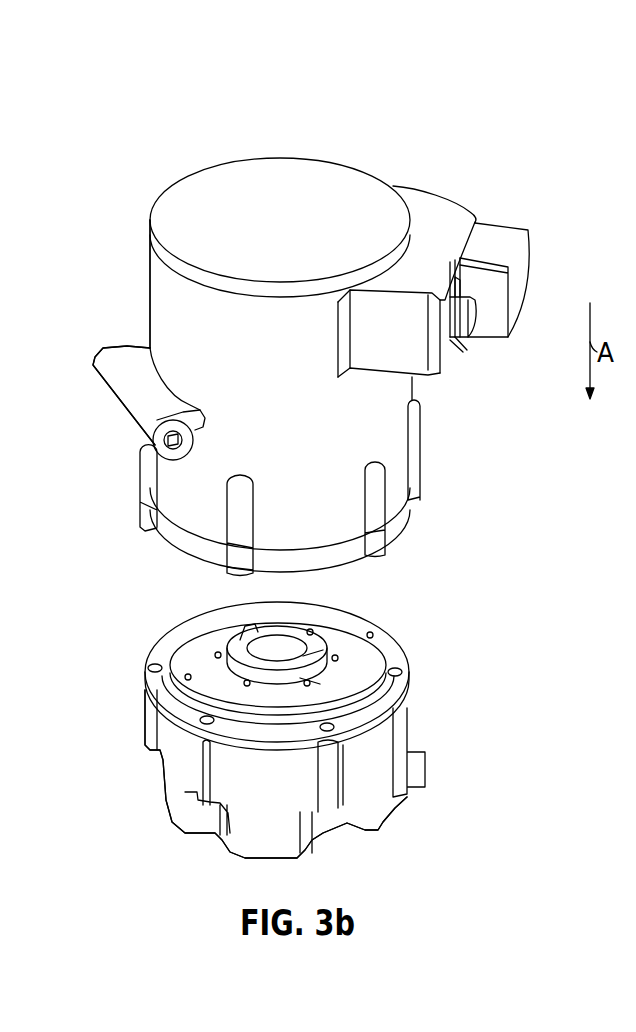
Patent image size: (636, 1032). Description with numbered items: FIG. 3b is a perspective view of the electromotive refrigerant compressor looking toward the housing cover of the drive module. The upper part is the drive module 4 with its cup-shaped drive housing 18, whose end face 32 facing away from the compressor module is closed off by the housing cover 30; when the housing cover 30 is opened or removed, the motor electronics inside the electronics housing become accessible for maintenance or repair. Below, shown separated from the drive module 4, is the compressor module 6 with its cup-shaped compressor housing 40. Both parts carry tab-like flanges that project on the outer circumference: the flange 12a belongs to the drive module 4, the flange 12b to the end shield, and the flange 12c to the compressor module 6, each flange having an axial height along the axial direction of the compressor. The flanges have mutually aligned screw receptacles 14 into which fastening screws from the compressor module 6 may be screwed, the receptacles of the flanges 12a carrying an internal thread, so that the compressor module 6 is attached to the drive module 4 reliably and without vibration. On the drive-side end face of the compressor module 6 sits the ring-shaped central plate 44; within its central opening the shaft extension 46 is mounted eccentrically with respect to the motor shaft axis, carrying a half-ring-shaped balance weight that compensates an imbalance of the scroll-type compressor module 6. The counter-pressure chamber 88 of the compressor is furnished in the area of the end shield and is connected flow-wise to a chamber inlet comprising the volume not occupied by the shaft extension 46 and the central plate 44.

The end face 32 is at (233, 201).
The housing cover 30 is at (443, 198).
The drive module 4 is at (333, 445).
The drive housing 18 is at (333, 445).
The flange 12a is at (373, 493).
The flange 12b is at (385, 553).
The central plate 44 is at (347, 673).
The screw receptacle 14 is at (207, 717).
The shaft extension 46 is at (237, 639).
The counter-pressure chamber 88 is at (311, 660).
The flange 12c is at (400, 722).
The compressor module 6 is at (370, 772).
The compressor housing 40 is at (370, 772).